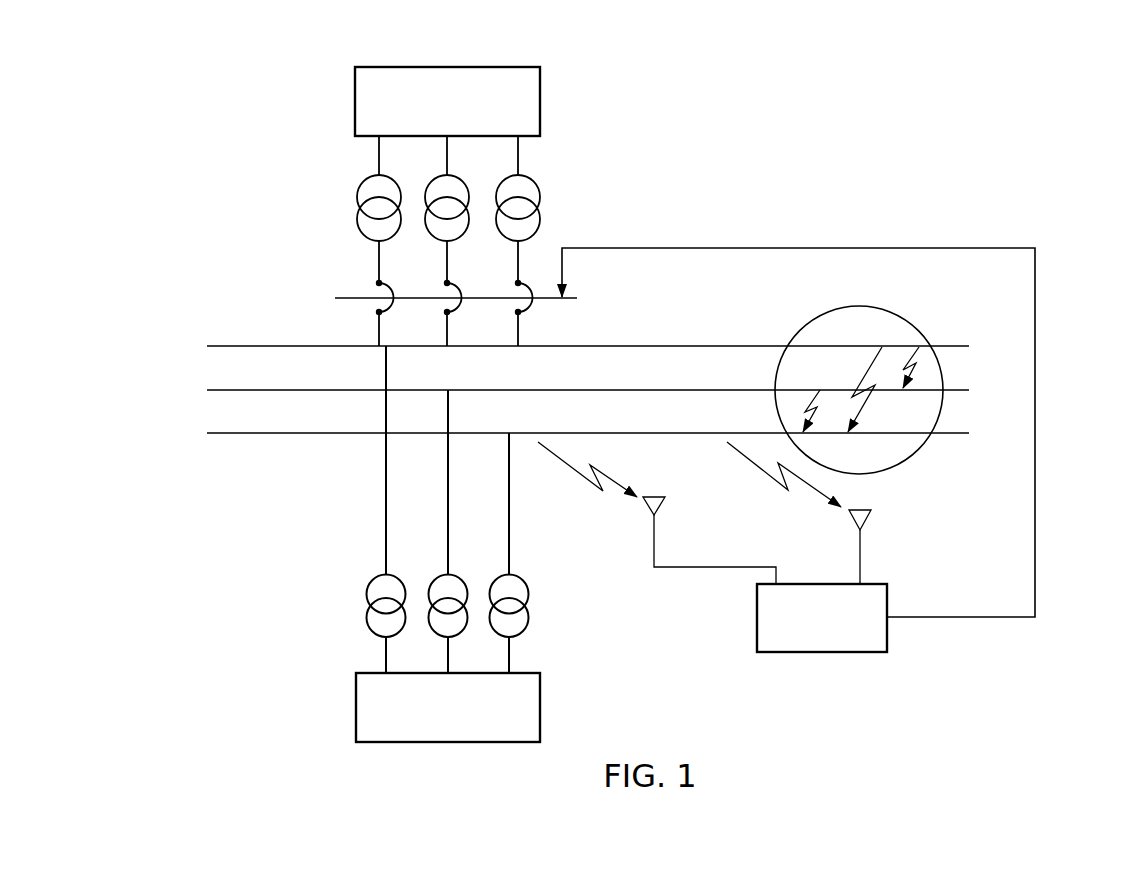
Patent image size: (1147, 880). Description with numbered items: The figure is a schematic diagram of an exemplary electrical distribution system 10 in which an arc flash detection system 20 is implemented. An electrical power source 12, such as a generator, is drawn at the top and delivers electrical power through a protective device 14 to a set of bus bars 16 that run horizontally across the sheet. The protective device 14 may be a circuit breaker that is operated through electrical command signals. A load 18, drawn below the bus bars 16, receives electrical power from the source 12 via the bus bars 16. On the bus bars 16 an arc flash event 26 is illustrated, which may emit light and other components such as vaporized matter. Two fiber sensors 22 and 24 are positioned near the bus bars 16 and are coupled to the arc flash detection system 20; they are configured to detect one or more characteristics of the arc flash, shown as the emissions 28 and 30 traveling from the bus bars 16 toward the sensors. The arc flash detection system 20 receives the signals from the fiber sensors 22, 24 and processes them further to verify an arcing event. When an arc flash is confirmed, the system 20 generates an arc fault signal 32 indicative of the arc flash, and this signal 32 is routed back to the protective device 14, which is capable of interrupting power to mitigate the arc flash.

The electrical distribution system 10 is at (1041, 98).
The electrical power source 12 is at (540, 100).
The protective device 14 is at (350, 277).
The bus bars 16 is at (299, 442).
The load 18 is at (356, 704).
The arc flash detection system 20 is at (822, 662).
The fiber sensor 22 is at (640, 509).
The fiber sensor 24 is at (883, 527).
The arc flash event 26 is at (922, 313).
The arc flash characteristic 28 is at (612, 475).
The arc flash characteristic 30 is at (813, 492).
The arc fault signal 32 is at (960, 620).